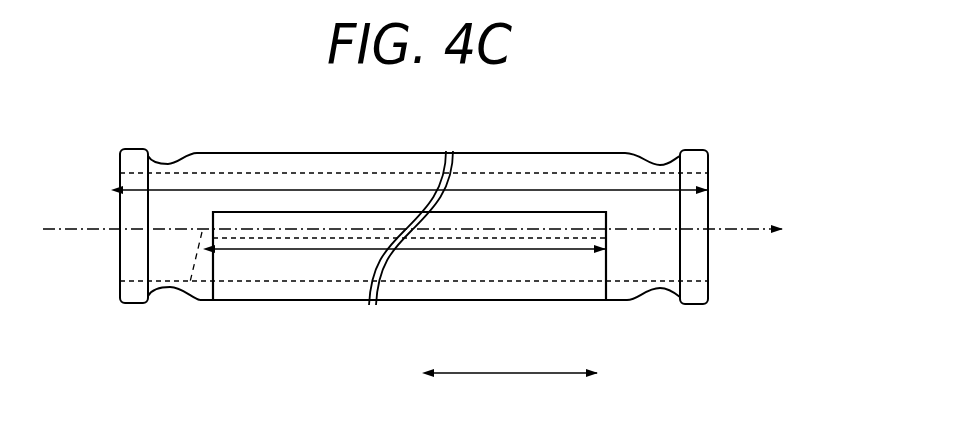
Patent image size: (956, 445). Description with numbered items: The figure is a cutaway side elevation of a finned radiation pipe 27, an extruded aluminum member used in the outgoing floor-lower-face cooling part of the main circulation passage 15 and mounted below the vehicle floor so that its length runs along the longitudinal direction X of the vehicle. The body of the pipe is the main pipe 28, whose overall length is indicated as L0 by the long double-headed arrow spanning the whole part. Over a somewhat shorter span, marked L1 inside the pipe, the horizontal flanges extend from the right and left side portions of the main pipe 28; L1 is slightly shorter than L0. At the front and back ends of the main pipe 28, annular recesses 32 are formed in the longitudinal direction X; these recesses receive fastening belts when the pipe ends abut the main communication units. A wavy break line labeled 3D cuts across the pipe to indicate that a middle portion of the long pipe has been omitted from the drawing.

The finned radiation pipe 27 is at (720, 185).
The main pipe 28 is at (600, 165).
The annular recess 32 is at (172, 163).
The main circulation passage 15 is at (188, 297).
The length of the main pipe L0 is at (320, 190).
The extension length of the horizontal flanges L1 is at (300, 250).
The boundary line 3D is at (452, 290).
The longitudinal direction of the vehicle X is at (515, 355).